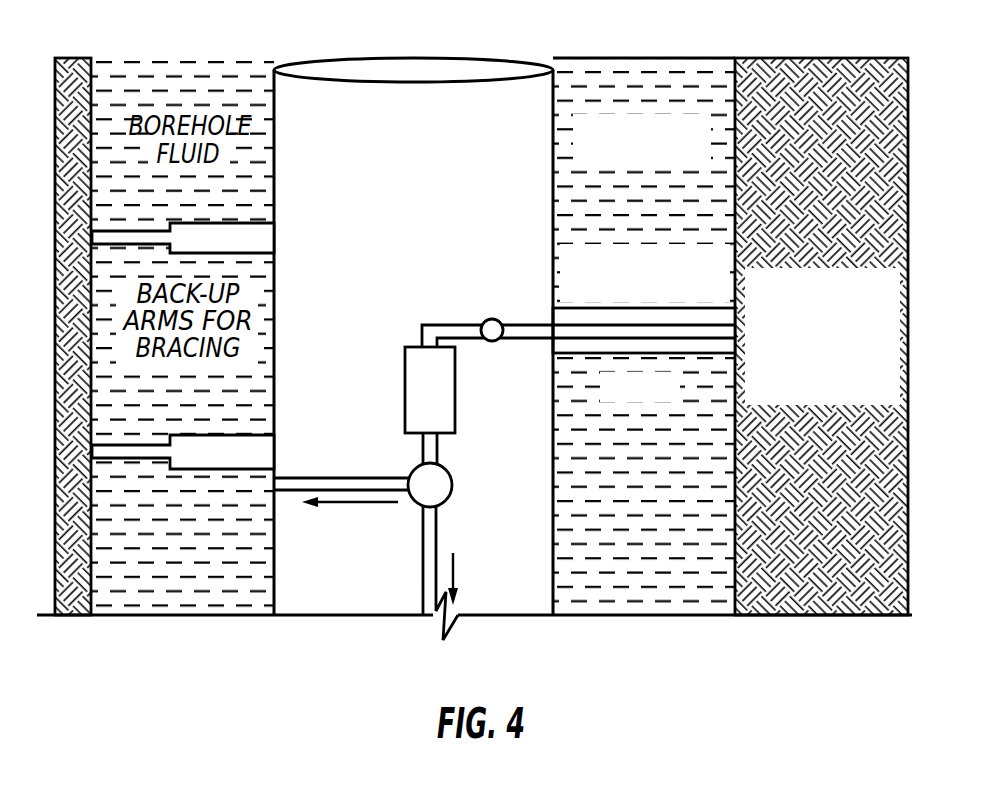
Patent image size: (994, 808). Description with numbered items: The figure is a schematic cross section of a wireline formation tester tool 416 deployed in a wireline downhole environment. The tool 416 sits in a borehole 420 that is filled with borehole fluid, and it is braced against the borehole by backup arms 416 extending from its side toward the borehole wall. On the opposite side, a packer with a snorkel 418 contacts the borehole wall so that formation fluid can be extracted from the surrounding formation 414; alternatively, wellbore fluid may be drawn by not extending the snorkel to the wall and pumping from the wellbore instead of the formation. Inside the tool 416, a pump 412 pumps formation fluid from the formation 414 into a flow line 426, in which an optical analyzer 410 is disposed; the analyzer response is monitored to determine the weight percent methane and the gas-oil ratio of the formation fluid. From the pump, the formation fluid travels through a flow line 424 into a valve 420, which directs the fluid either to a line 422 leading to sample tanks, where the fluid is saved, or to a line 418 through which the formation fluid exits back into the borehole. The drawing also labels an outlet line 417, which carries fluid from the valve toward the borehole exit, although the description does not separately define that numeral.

The formation 414 is at (75, 58).
The wireline formation tester tool 416 is at (410, 57).
The borehole 420 is at (638, 58).
The flow line 426 is at (543, 323).
The pump 412 is at (405, 360).
The optical analyzer 410 is at (482, 343).
The flow line 424 is at (440, 445).
The outlet line to borehole exit 417 is at (363, 478).
The line 422 is at (443, 547).
The packer with snorkel 418 is at (622, 350).